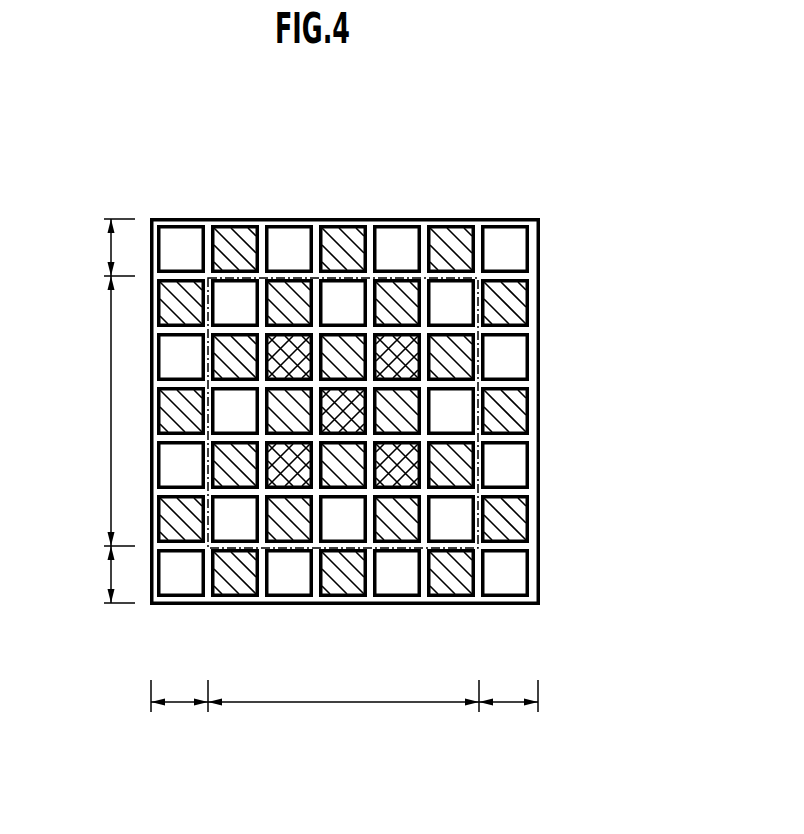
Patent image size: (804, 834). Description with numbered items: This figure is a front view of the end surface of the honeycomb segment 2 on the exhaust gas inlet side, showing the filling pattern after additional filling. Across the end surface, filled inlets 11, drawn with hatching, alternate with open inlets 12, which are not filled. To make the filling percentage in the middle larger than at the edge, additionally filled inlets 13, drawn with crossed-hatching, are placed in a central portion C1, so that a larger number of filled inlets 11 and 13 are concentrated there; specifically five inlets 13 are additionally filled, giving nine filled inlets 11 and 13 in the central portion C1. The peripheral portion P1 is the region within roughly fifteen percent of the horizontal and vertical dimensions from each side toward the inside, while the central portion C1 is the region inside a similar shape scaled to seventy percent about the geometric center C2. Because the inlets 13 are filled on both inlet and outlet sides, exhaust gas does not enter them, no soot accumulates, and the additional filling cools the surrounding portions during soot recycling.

The honeycomb segment 2 is at (543, 141).
The filled inlets 11 is at (395, 300).
The open inlets 12 is at (337, 298).
The additionally filled inlets 13 is at (397, 357).
The central portion C1 is at (167, 636).
The geometric center C2 is at (342, 408).
The peripheral portion P1 is at (307, 489).